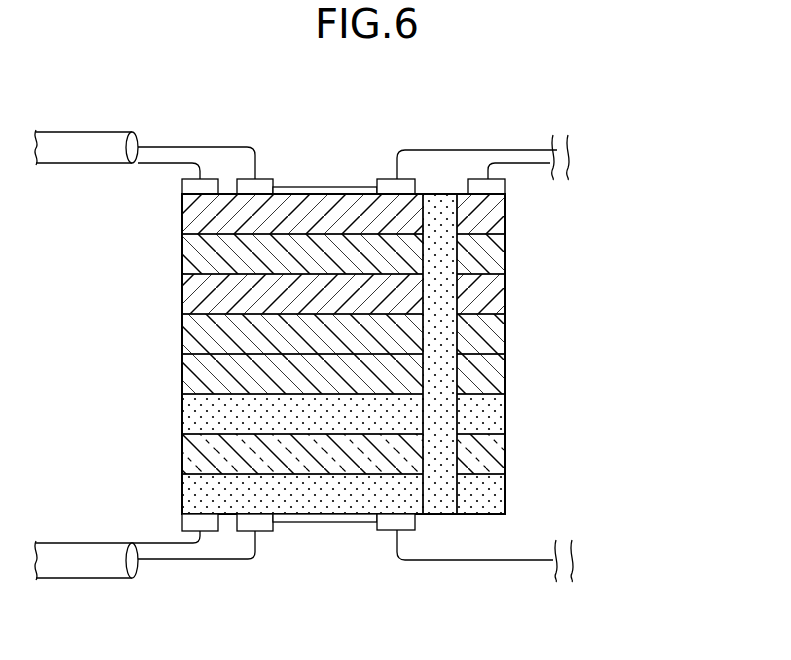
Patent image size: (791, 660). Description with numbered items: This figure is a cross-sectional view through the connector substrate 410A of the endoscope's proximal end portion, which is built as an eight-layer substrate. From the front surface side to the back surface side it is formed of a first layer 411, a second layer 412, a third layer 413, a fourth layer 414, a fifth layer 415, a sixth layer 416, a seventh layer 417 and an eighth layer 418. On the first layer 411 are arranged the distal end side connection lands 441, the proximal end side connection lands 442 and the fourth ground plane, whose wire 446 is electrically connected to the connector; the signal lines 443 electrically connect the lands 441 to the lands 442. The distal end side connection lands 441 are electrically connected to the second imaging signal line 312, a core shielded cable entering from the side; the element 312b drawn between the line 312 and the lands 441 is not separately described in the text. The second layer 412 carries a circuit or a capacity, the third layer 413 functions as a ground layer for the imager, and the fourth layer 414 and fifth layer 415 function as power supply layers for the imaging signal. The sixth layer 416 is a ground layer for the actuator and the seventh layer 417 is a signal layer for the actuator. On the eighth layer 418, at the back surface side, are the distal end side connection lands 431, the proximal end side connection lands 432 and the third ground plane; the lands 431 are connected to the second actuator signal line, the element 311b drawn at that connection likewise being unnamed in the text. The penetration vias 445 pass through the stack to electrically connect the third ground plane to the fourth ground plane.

The second imaging signal line 312 is at (90, 132).
The wire conductor 312b is at (160, 163).
The wire conductor 311b is at (157, 543).
The distal end side connection lands 441 is at (263, 179).
The proximal end side connection lands 442 is at (383, 179).
The signal lines 443 is at (345, 187).
The wire 446 is at (533, 165).
The penetration vias 445 is at (483, 372).
The connector substrate 410A is at (436, 372).
The first layer 411 is at (506, 214).
The second layer 412 is at (506, 254).
The third layer 413 is at (506, 294).
The fourth layer 414 is at (506, 334).
The fifth layer 415 is at (506, 374).
The sixth layer 416 is at (506, 414).
The seventh layer 417 is at (506, 454).
The eighth layer 418 is at (506, 494).
The distal end side connection lands 431 is at (204, 560).
The proximal end side connection lands 432 is at (392, 531).